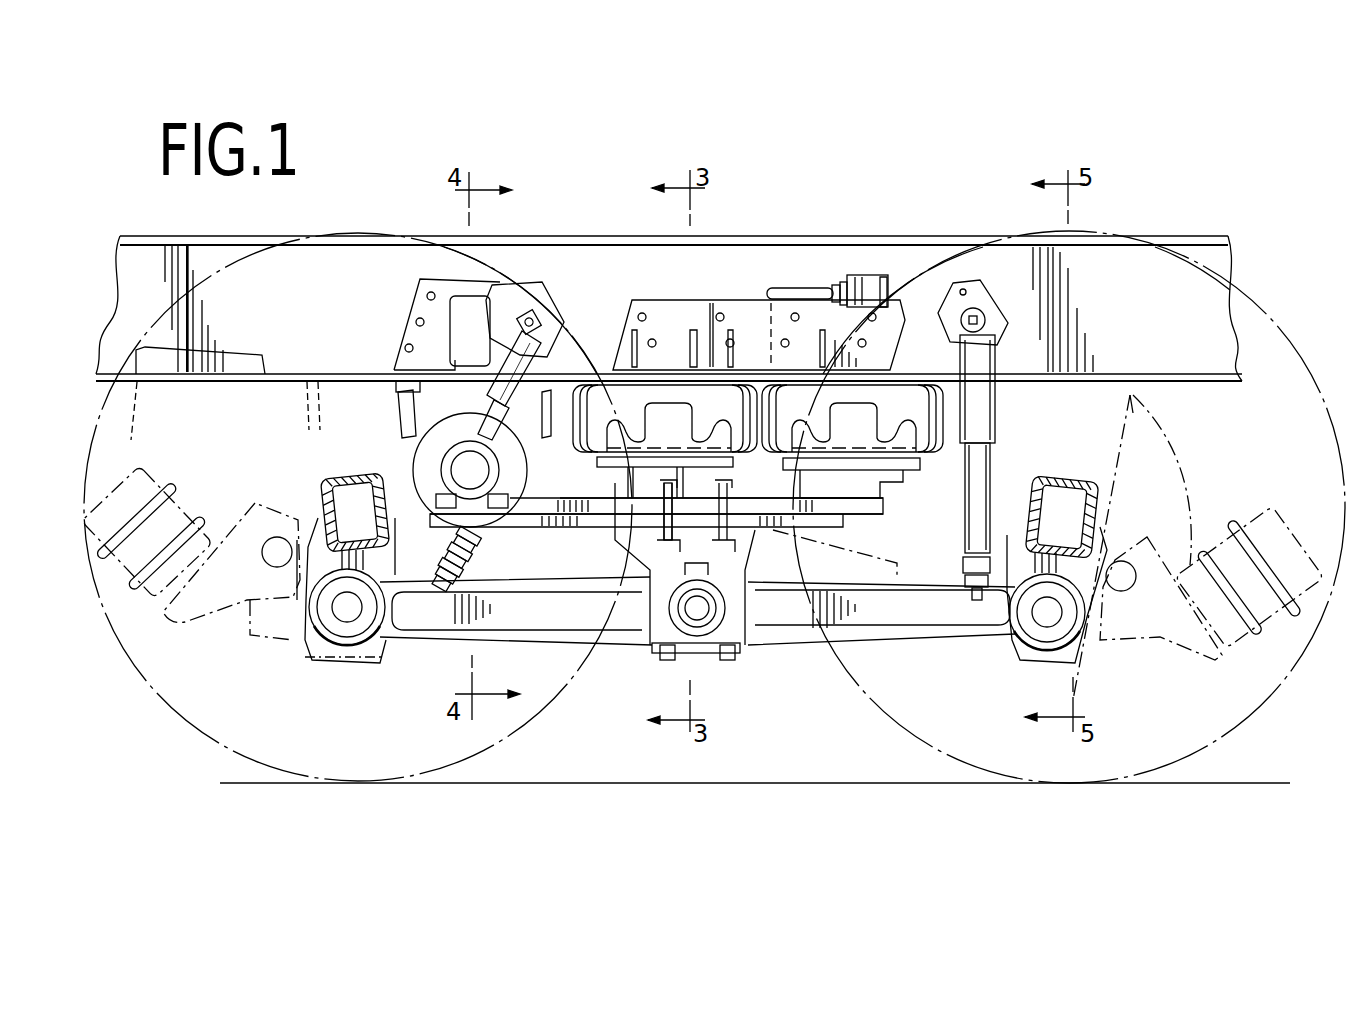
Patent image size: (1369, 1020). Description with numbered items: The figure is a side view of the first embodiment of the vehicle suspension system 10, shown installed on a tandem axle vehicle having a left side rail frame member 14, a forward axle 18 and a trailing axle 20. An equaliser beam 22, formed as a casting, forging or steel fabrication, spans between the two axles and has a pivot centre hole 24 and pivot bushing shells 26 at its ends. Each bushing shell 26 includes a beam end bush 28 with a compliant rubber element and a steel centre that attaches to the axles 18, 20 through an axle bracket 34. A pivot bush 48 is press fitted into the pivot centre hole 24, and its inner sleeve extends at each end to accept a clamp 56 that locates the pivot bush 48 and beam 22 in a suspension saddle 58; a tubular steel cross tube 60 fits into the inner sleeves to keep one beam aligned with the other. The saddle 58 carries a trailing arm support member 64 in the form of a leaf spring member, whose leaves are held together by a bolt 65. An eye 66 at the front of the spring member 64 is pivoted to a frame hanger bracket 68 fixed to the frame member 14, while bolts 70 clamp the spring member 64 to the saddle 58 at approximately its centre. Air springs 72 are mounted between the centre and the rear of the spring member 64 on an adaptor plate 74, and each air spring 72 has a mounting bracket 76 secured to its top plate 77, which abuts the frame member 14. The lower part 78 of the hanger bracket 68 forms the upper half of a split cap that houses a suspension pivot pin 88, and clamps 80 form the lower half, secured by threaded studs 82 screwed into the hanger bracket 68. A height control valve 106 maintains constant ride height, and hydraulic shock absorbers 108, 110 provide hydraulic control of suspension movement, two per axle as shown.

The suspension system 10 is at (808, 660).
The left side rail frame member 14 is at (932, 257).
The forward axle 18 is at (271, 418).
The trailing axle 20 is at (1150, 447).
The equaliser beam 22 is at (918, 612).
The pivot centre hole 24 is at (683, 617).
The pivot bushing shells 26 is at (332, 632).
The beam end bush 28 is at (350, 626).
The axle bracket 34 is at (321, 532).
The pivot bush 48 is at (714, 620).
The clamp 56 is at (667, 622).
The suspension saddle 58 is at (653, 563).
The cross tube 60 is at (700, 604).
The trailing arm support member 64 is at (845, 525).
The bolt 65 is at (693, 503).
The eye 66 is at (430, 467).
The frame hanger bracket 68 is at (415, 405).
The bolts 70 is at (667, 497).
The air springs 72 is at (772, 390).
The adaptor plate 74 is at (880, 498).
The mounting bracket 76 is at (645, 300).
The top plate 77 is at (662, 393).
The lower part of hanger bracket 78 is at (442, 455).
The clamps 80 is at (424, 519).
The threaded studs 82 is at (500, 509).
The suspension pivot pin 88 is at (462, 470).
The height control valve 106 is at (862, 288).
The hydraulic shock absorber 108 is at (978, 470).
The shock absorber 110 is at (510, 360).